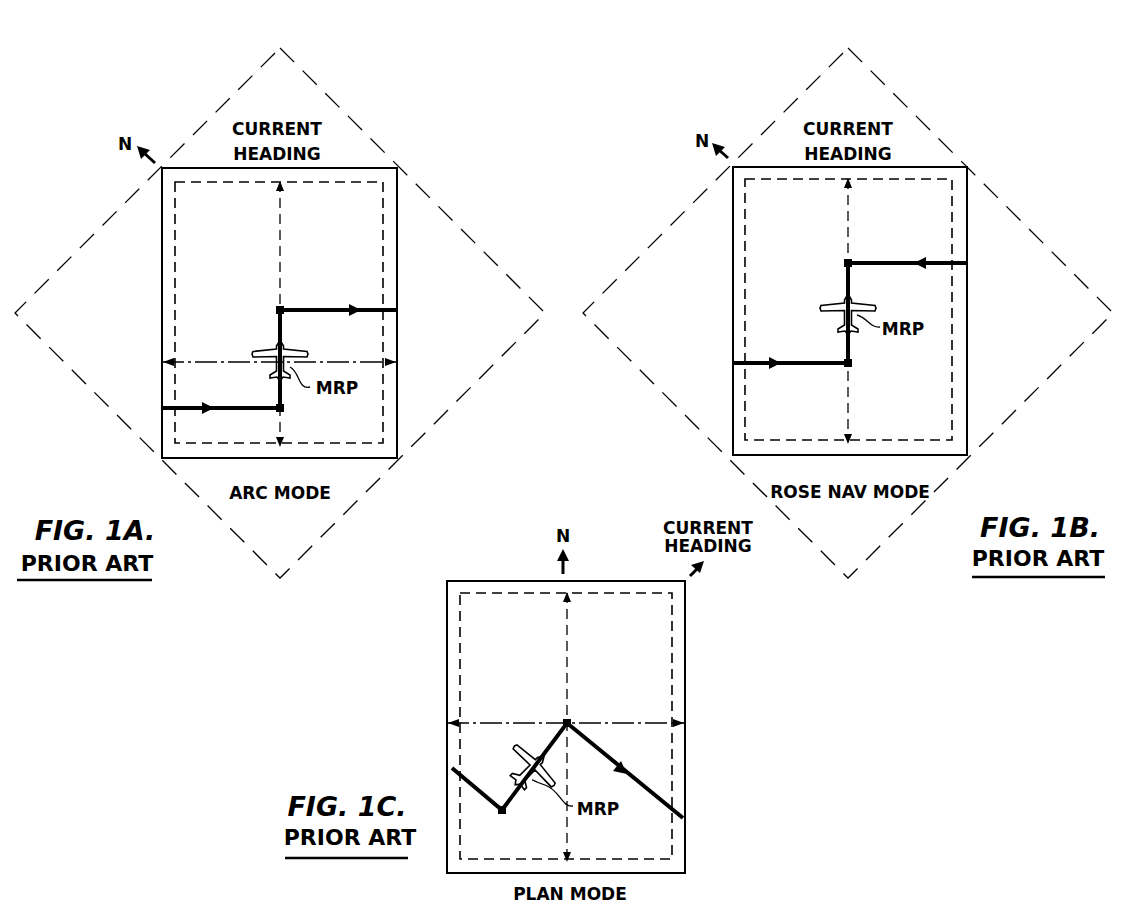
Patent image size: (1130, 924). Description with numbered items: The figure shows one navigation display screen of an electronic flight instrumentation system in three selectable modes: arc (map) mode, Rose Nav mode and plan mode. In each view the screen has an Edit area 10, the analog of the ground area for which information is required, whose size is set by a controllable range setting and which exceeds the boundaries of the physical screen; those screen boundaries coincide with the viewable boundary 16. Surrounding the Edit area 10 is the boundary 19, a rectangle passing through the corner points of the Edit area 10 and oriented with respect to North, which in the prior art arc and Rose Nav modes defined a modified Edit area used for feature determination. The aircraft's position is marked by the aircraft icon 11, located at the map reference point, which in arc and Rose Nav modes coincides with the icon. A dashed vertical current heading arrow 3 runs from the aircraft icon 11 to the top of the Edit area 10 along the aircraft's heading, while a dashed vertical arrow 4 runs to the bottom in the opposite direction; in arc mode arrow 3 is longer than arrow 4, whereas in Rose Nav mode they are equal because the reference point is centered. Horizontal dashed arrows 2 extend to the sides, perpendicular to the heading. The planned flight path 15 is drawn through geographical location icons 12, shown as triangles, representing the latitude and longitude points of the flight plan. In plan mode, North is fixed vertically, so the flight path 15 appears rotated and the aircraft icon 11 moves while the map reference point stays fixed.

In FIG. 1A, the horizontal dashed arrows 2 is at (200, 362).
In FIG. 1C, the horizontal dashed arrows 2 is at (477, 722).
In FIG. 1A, the current heading arrow 3 is at (282, 198).
In FIG. 1B, the current heading arrow 3 is at (850, 200).
In FIG. 1A, the reverse vertical arrow 4 is at (284, 433).
In FIG. 1B, the reverse vertical arrow 4 is at (855, 432).
In FIG. 1A, the Edit area 10 is at (162, 305).
In FIG. 1B, the Edit area 10 is at (733, 313).
In FIG. 1C, the Edit area 10 is at (447, 690).
In FIG. 1A, the aircraft icon 11 is at (278, 347).
In FIG. 1B, the aircraft icon 11 is at (845, 298).
In FIG. 1C, the aircraft icon 11 is at (520, 762).
In FIG. 1A, the geographical location icons 12 is at (280, 308).
In FIG. 1B, the geographical location icons 12 is at (920, 262).
In FIG. 1C, the geographical location icons 12 is at (565, 722).
In FIG. 1A, the planned flight path 15 is at (313, 311).
In FIG. 1B, the planned flight path 15 is at (898, 260).
In FIG. 1C, the planned flight path 15 is at (490, 800).
In FIG. 1A, the viewable boundary 16 is at (223, 183).
In FIG. 1B, the viewable boundary 16 is at (795, 180).
In FIG. 1C, the viewable boundary 16 is at (518, 594).
In FIG. 1A, the boundary of modified Edit area 19 is at (88, 242).
In FIG. 1B, the boundary of modified Edit area 19 is at (677, 223).